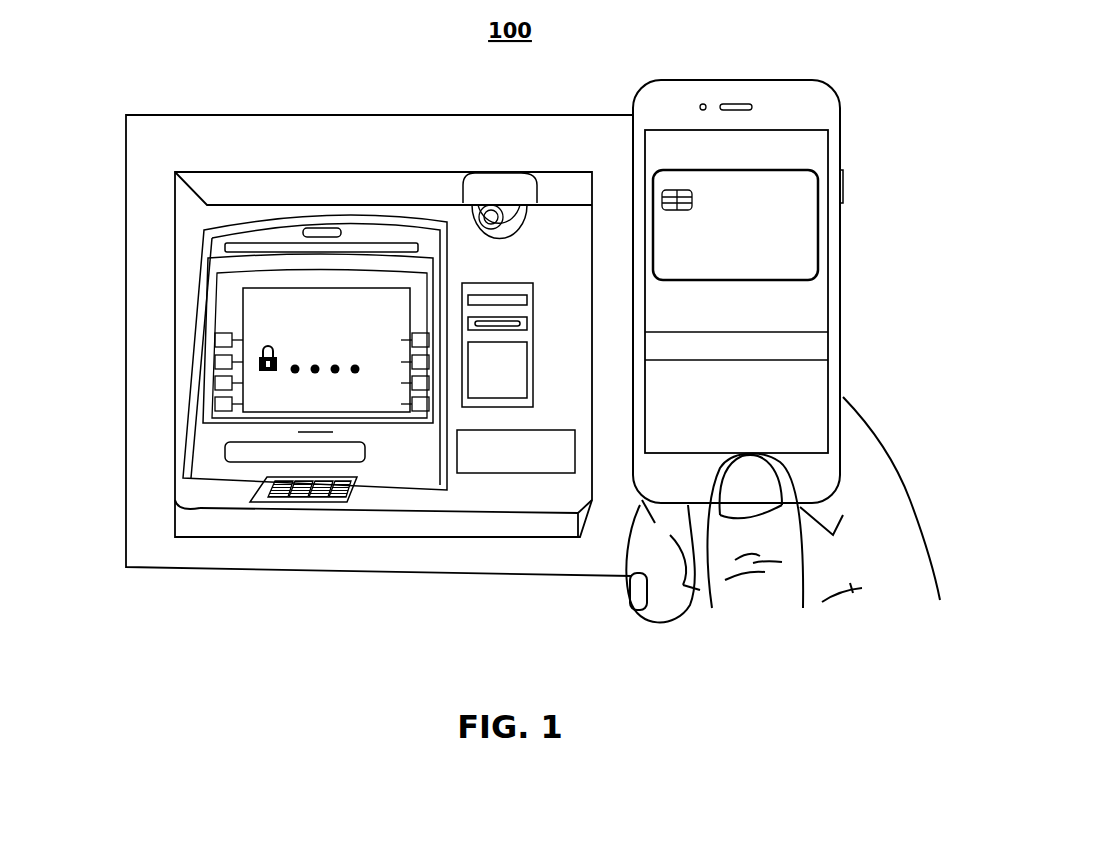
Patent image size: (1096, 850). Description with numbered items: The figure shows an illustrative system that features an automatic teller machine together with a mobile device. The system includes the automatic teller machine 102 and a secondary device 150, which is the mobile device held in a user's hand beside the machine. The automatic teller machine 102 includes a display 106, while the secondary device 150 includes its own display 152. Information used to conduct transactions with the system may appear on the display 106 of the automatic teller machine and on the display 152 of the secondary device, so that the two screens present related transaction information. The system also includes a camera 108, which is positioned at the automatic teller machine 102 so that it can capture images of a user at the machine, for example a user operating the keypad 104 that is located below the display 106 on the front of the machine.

The automatic teller machine 102 is at (238, 128).
The keypad 104 is at (234, 483).
The display 106 is at (252, 397).
The camera 108 is at (498, 186).
The secondary device 150 is at (791, 261).
The display 152 is at (818, 155).